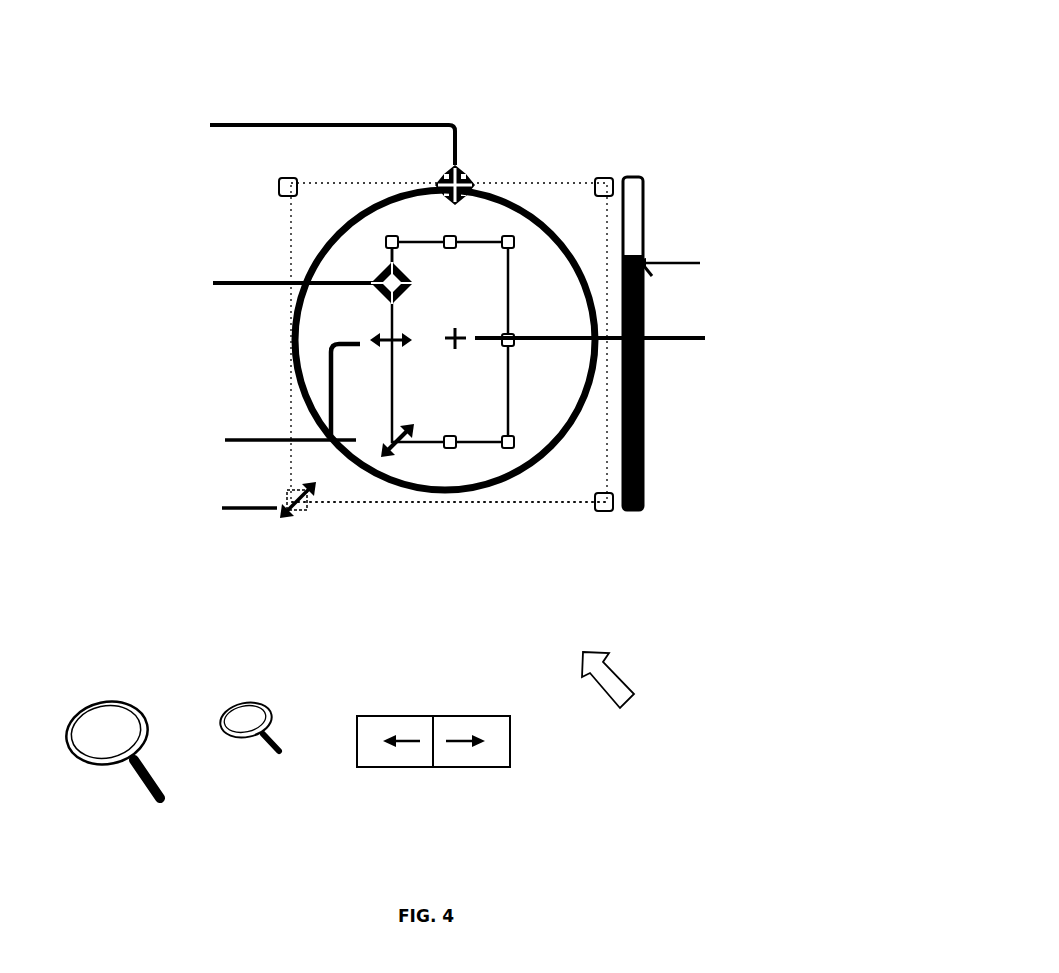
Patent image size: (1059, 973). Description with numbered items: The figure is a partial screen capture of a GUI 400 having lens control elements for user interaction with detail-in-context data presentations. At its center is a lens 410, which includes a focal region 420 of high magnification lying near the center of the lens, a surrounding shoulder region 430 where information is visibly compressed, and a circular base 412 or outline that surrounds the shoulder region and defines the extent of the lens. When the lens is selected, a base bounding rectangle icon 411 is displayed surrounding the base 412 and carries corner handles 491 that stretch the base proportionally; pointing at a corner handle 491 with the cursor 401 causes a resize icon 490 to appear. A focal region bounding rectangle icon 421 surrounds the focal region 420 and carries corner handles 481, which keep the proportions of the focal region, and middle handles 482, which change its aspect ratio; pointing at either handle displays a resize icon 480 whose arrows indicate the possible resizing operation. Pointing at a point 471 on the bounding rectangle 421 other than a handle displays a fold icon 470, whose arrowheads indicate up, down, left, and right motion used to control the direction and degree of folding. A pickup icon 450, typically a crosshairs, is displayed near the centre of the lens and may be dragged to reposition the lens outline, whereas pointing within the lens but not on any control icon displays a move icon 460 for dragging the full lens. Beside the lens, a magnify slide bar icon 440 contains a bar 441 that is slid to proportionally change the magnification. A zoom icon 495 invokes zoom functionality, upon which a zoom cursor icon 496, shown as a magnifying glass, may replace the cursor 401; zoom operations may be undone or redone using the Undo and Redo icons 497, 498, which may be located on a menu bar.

The GUI 400 is at (462, 36).
The cursor 401 is at (617, 683).
The lens 410 is at (343, 478).
The base bounding rectangle icon 411 is at (358, 505).
The base 412 is at (408, 487).
The focal region 420 is at (467, 400).
The focal region bounding rectangle icon 421 is at (470, 442).
The shoulder region 430 is at (446, 462).
The magnify slide bar icon 440 is at (727, 248).
The bar 441 is at (640, 258).
The pickup icon 450 is at (646, 359).
The move icon 460 is at (276, 140).
The fold icon 470 is at (249, 261).
The point 471 is at (392, 323).
The resize icon 480 is at (194, 399).
The corner handle 481 is at (511, 243).
The middle handle 482 is at (452, 240).
The resize icon 490 is at (175, 522).
The corner handle 491 is at (601, 508).
The zoom icon 495 is at (128, 793).
The zoom cursor icon 496 is at (268, 755).
The Undo icon 497 is at (370, 755).
The Redo icon 498 is at (458, 755).